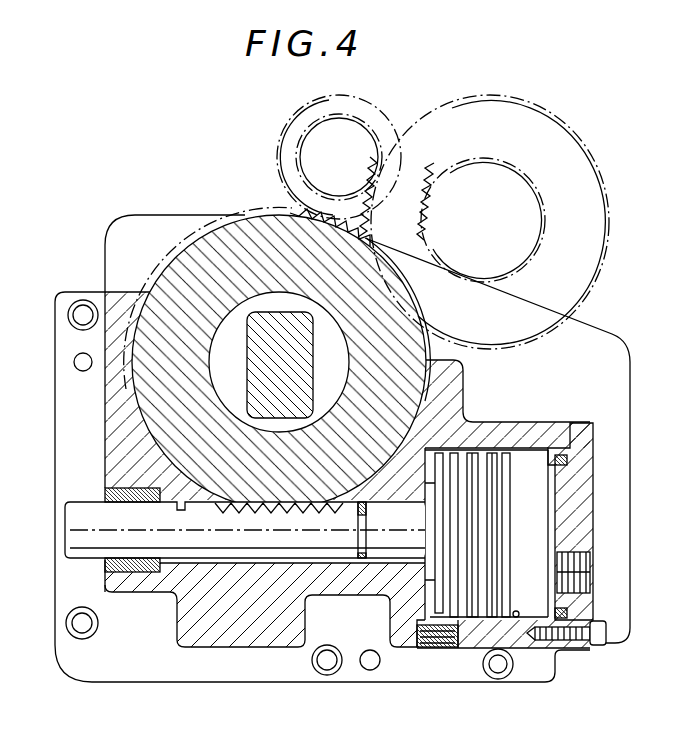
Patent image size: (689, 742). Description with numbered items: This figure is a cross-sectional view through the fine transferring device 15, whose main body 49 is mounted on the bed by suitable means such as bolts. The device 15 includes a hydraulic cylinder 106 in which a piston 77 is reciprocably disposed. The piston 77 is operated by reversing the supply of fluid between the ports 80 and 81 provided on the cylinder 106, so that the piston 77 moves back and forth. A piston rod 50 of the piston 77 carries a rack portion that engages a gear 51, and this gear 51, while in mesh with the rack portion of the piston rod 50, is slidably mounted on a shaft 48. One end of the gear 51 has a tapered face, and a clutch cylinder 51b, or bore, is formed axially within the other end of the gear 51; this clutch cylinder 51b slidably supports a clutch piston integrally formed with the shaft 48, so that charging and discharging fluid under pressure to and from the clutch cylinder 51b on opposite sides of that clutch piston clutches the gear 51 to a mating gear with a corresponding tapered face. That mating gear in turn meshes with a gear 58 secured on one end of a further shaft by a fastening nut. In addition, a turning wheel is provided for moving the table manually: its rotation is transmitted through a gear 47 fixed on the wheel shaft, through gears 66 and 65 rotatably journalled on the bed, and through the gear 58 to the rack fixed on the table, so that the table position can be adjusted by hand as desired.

The fine transferring device 15 is at (597, 319).
The gear 47 is at (282, 156).
The shaft 48 is at (268, 348).
The main body 49 is at (258, 625).
The piston rod 50 is at (80, 512).
The gear 51 is at (273, 342).
The clutch cylinder 51b is at (340, 366).
The gear 58 is at (305, 108).
The gear 65 is at (508, 193).
The gear 66 is at (519, 122).
The piston 77 is at (478, 606).
The port 80 is at (592, 573).
The port 81 is at (432, 648).
The hydraulic cylinder 106 is at (517, 620).